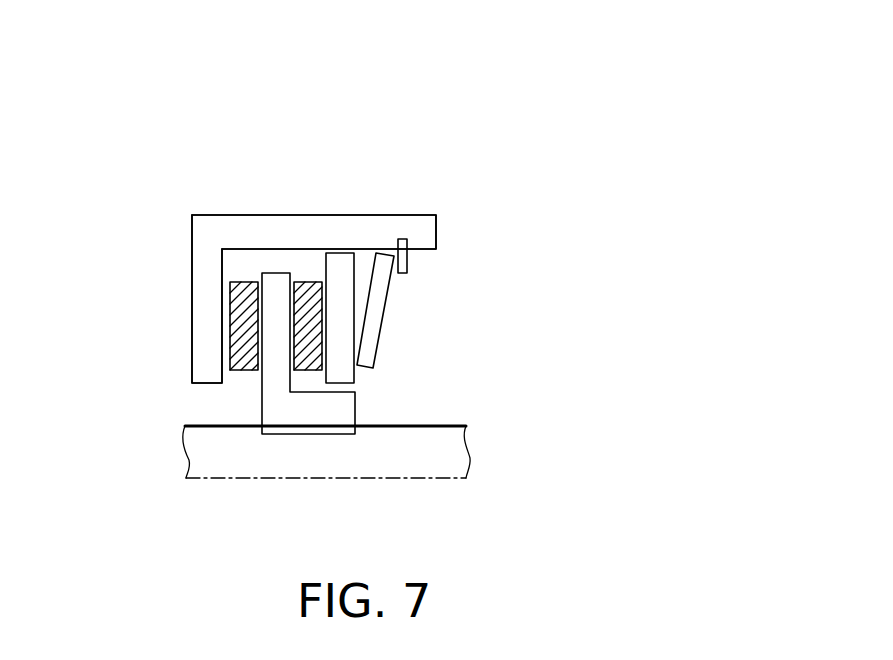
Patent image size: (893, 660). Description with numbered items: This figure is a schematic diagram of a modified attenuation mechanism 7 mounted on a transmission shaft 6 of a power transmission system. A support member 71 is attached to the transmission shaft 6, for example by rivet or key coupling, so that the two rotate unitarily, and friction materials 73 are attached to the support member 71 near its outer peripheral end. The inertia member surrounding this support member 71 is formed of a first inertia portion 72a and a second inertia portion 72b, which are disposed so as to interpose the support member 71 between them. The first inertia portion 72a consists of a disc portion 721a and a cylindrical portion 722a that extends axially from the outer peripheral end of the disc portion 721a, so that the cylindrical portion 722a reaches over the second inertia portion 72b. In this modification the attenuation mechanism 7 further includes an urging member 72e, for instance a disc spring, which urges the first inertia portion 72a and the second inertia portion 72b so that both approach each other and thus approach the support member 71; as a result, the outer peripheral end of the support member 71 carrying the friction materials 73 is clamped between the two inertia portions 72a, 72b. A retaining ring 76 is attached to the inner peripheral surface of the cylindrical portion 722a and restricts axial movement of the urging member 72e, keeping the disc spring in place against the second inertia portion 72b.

The attenuation mechanism 7 is at (446, 121).
The transmission shaft 6 is at (455, 457).
The support member 71 is at (262, 413).
The first inertia portion 72a is at (190, 216).
The disc portion 721a is at (191, 290).
The cylindrical portion 722a is at (323, 215).
The second inertia portion 72b is at (339, 268).
The urging member 72e is at (383, 334).
The friction materials 73 is at (307, 282).
The retaining ring 76 is at (408, 265).